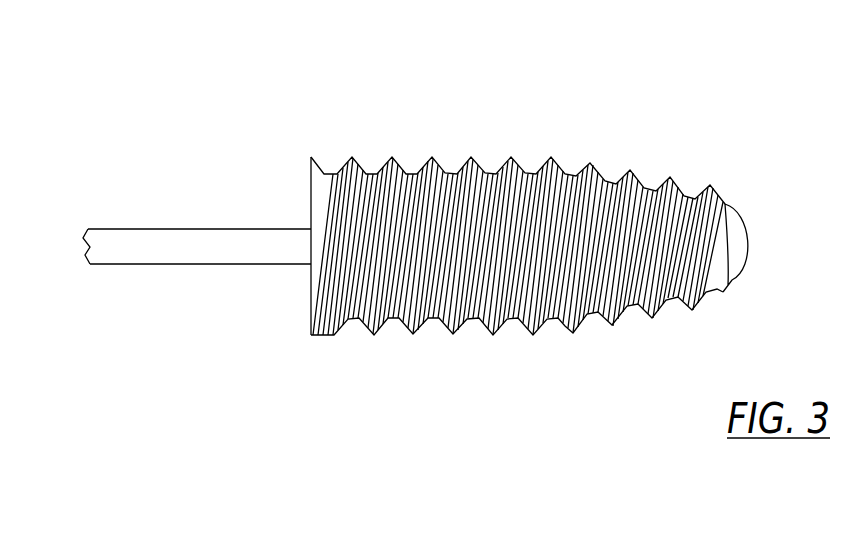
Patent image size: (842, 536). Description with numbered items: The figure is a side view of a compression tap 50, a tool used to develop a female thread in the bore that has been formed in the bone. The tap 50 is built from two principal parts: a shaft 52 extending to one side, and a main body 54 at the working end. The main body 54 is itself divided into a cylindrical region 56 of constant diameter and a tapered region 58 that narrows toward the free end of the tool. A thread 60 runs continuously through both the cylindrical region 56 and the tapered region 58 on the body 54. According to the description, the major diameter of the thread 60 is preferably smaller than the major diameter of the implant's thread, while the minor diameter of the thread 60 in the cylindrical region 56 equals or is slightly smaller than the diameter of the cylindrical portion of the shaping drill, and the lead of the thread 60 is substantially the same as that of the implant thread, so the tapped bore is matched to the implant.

The compression tap 50 is at (697, 96).
The shaft 52 is at (160, 229).
The main body 54 is at (471, 89).
The cylindrical region 56 is at (414, 172).
The tapered region 58 is at (672, 296).
The thread 60 is at (552, 157).